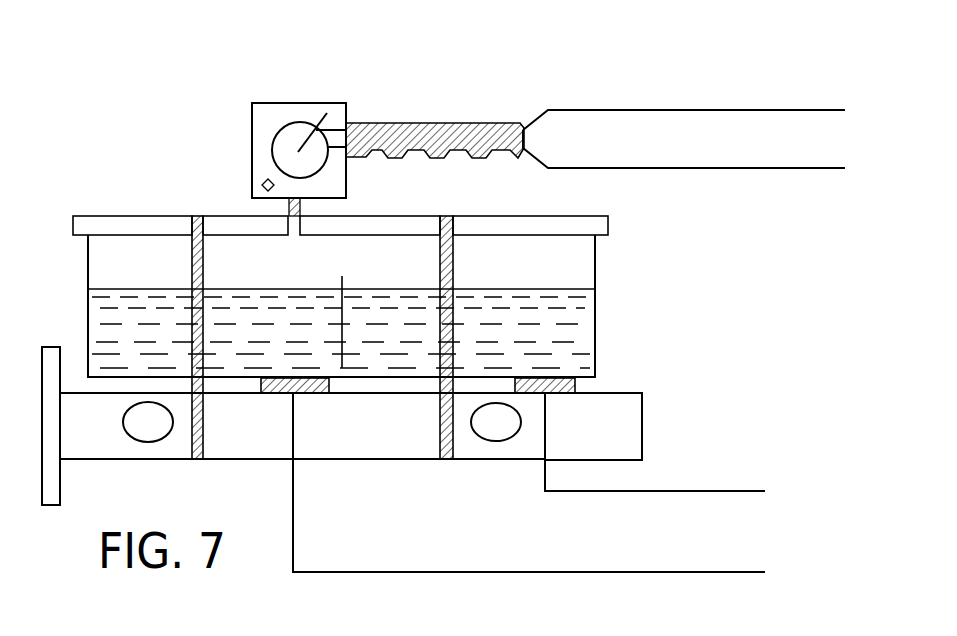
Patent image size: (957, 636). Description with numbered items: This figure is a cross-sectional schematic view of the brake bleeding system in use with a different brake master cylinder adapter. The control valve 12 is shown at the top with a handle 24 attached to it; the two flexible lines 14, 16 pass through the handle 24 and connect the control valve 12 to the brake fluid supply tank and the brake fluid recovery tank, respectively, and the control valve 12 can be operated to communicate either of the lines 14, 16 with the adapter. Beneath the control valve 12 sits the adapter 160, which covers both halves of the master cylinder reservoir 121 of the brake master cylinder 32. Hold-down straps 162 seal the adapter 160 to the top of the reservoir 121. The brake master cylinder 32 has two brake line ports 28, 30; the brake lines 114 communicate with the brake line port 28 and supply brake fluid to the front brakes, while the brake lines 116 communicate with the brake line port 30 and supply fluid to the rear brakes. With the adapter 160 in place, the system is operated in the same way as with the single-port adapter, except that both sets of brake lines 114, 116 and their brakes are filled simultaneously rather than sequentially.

The control valve 12 is at (276, 112).
The handle 24 is at (412, 123).
The line 14 is at (650, 110).
The line 16 is at (648, 168).
The adapter 160 is at (606, 226).
The hold-down straps 162 is at (204, 262).
The brake master cylinder 32 is at (653, 290).
The master cylinder reservoir 121 is at (88, 307).
The brake line port 28 is at (310, 393).
The brake line port 30 is at (563, 392).
The brake lines 116 is at (680, 491).
The brake lines 114 is at (626, 572).